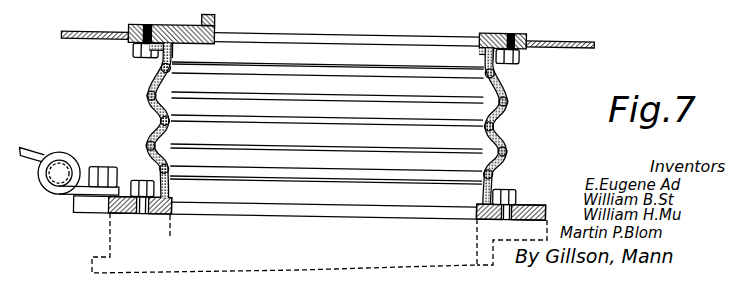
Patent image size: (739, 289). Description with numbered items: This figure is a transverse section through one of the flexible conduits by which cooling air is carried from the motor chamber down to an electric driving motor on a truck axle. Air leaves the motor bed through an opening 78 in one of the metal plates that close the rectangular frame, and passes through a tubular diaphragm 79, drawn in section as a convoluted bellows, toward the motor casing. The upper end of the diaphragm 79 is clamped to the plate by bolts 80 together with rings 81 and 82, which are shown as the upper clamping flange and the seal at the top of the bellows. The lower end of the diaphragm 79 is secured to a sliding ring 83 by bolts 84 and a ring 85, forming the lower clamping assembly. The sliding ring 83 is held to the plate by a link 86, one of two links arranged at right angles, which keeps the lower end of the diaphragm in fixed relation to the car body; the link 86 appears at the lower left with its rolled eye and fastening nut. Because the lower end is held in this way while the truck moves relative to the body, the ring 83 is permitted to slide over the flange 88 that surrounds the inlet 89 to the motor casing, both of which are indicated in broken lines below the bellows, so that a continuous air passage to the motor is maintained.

The opening 78 is at (362, 40).
The tubular diaphragm 79 is at (499, 113).
The bolt 80 is at (518, 62).
The ring 81 is at (490, 34).
The ring 82 is at (480, 48).
The sliding ring 83 is at (524, 206).
The bolt 84 is at (508, 187).
The ring 85 is at (516, 200).
The link 86 is at (34, 150).
The flange 88 is at (478, 235).
The inlet 89 is at (323, 228).